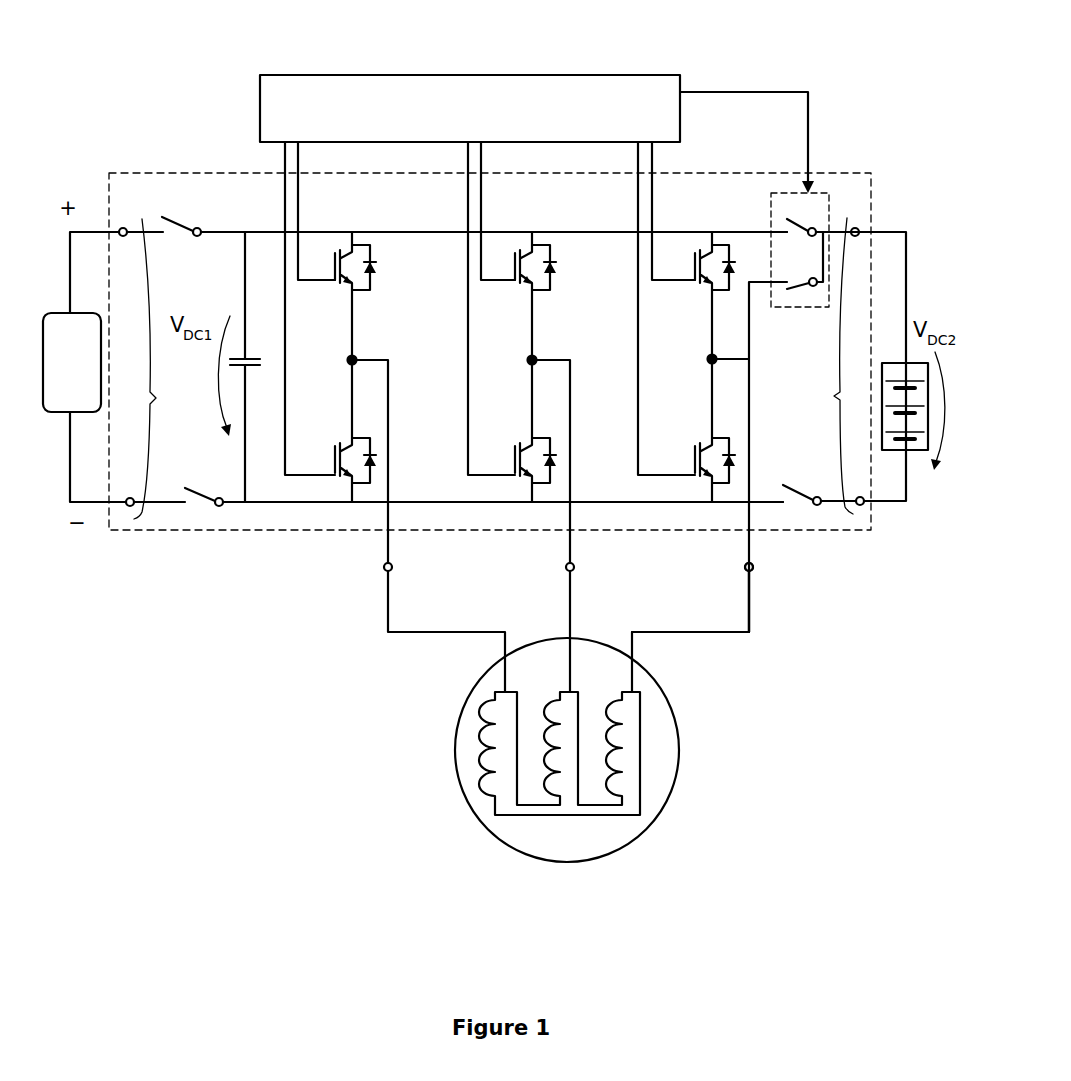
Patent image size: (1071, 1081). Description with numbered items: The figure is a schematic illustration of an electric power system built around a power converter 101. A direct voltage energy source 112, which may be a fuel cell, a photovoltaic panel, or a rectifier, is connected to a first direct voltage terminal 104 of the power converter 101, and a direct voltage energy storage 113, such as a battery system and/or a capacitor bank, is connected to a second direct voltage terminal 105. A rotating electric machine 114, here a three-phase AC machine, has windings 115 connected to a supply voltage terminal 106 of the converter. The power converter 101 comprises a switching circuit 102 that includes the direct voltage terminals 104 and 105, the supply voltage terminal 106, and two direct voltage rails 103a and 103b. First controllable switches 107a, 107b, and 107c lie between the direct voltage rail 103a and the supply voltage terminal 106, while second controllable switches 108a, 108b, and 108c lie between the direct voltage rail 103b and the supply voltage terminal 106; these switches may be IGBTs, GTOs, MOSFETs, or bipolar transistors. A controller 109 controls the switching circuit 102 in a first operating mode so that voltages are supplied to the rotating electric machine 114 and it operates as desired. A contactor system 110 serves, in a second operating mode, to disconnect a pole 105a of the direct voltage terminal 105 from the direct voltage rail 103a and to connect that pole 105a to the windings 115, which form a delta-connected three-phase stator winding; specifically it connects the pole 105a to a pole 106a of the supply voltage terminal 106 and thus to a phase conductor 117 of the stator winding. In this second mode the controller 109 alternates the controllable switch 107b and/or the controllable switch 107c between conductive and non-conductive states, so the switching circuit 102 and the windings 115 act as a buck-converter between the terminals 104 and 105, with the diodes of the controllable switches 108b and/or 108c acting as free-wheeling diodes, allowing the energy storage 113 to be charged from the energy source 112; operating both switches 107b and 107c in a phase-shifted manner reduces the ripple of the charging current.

The power converter 101 is at (225, 57).
The switching circuit 102 is at (190, 172).
The direct voltage rail 103a is at (443, 236).
The direct voltage rail 103b is at (453, 501).
The first direct voltage terminal 104 is at (157, 399).
The second direct voltage terminal 105 is at (832, 396).
The pole of the direct voltage terminal 105a is at (858, 230).
The supply voltage terminal 106 is at (777, 572).
The pole of the supply voltage terminal 106a is at (755, 568).
The first controllable switch 107a is at (711, 247).
The first controllable switch 107b is at (531, 247).
The first controllable switch 107c is at (351, 247).
The second controllable switch 108a is at (710, 446).
The second controllable switch 108b is at (530, 446).
The second controllable switch 108c is at (350, 446).
The controller 109 is at (454, 128).
The contactor system 110 is at (783, 192).
The direct voltage energy source 112 is at (85, 378).
The direct voltage energy storage 113 is at (913, 452).
The rotating electric machine 114 is at (679, 742).
The windings 115 is at (478, 741).
The phase conductor 117 is at (752, 622).